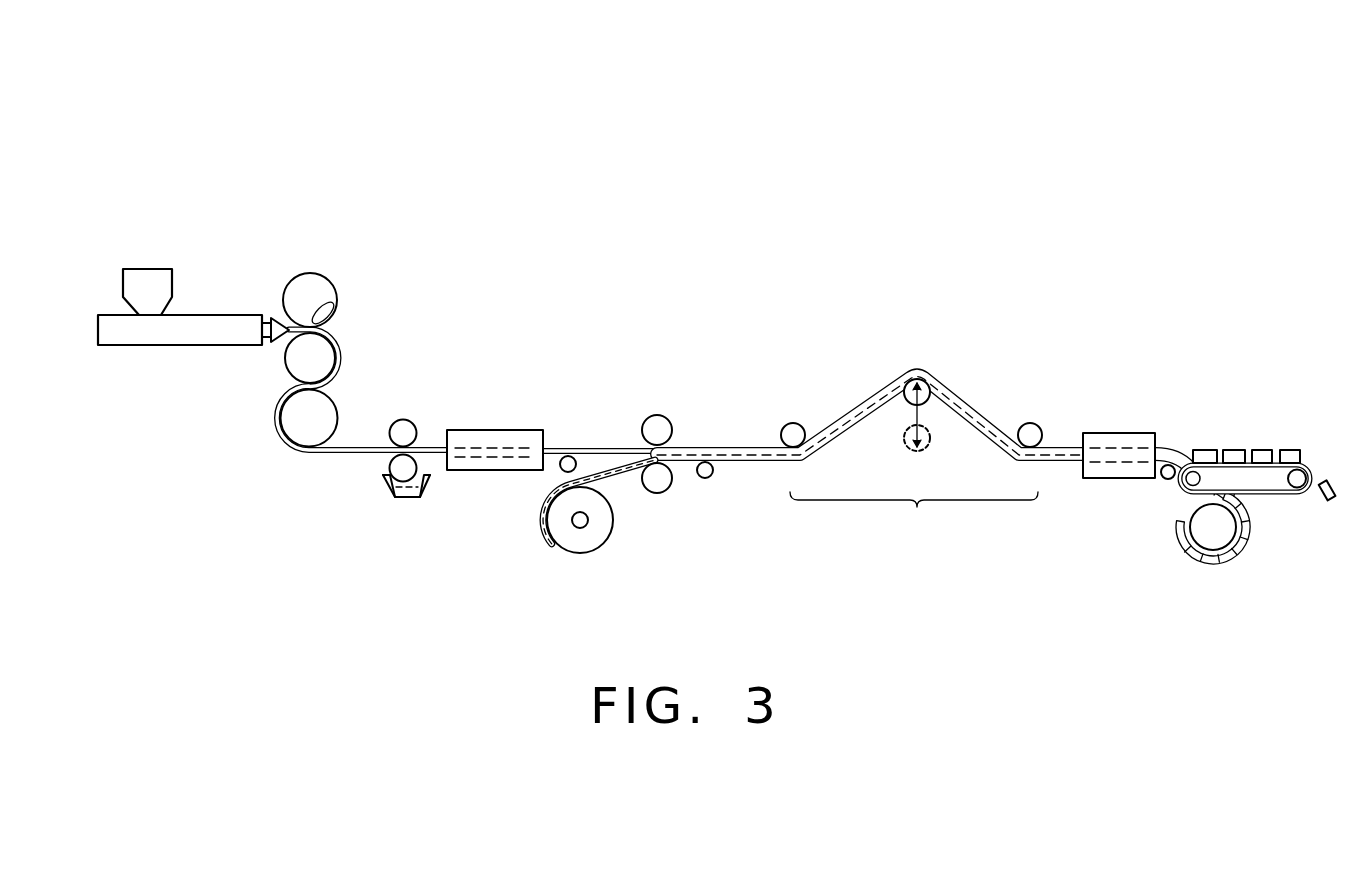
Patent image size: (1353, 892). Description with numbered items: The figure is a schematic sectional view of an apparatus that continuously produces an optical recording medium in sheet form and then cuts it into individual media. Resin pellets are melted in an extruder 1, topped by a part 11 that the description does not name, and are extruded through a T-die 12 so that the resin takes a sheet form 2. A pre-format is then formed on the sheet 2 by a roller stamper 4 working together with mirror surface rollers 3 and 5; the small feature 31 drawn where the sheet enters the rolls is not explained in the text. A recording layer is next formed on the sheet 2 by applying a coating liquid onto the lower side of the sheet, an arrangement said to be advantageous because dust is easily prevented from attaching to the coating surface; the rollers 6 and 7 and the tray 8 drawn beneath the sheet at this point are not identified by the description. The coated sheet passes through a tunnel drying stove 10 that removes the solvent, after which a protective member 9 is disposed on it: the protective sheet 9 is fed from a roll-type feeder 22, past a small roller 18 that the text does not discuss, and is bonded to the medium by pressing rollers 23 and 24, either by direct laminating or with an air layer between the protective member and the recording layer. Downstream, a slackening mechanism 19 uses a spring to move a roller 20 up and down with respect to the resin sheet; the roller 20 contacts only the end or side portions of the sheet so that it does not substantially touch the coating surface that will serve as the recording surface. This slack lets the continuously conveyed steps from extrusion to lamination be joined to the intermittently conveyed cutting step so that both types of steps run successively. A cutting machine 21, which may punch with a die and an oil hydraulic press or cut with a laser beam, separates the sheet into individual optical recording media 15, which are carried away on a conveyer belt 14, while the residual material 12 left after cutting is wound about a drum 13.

The extruder 1 is at (162, 335).
The sheet 2 is at (328, 458).
The mirror surface roller 3 is at (320, 282).
The roller stamper 4 is at (331, 362).
The mirror surface roller 5 is at (331, 420).
The coating roller 6 is at (386, 470).
The roller 7 is at (411, 423).
The coating liquid tray 8 is at (409, 499).
The protective member 9 is at (615, 482).
The tunnel drying stove 10 is at (500, 431).
The hopper 11 is at (160, 283).
The T-die 12 is at (275, 343).
The drum 13 is at (1200, 535).
The conveyer belt 14 is at (1282, 495).
The optical recording media 15 is at (1205, 450).
The guide roller 18 is at (560, 469).
The slackening mechanism 19 is at (914, 517).
The roller 20 is at (900, 398).
The cutting machine 21 is at (1128, 434).
The roll-type feeder 22 is at (580, 556).
The pressing roller 23 is at (666, 416).
The pressing roller 24 is at (672, 490).
The resin bank 31 is at (336, 302).